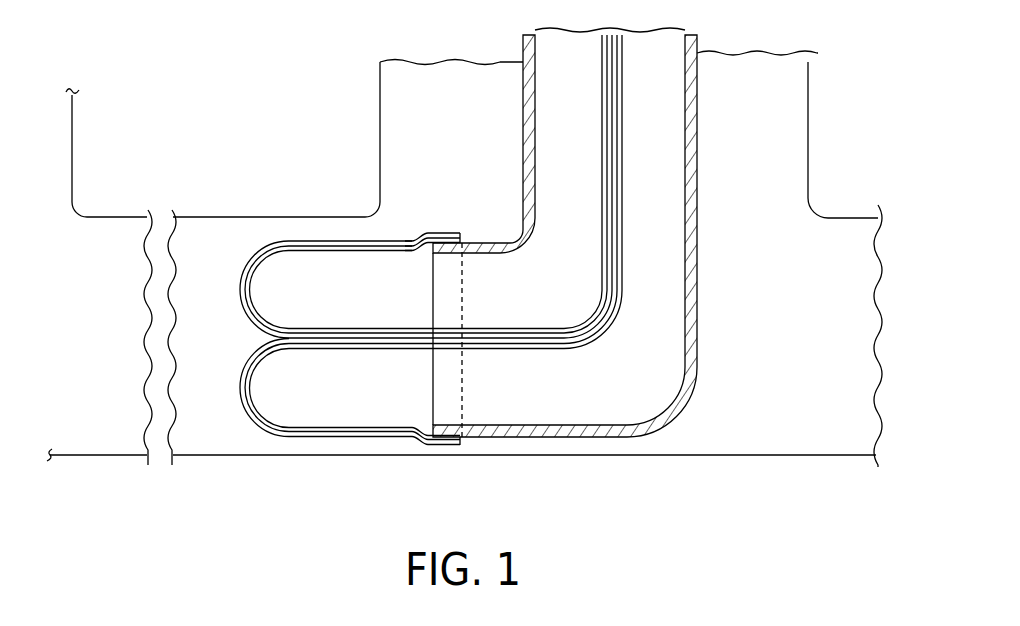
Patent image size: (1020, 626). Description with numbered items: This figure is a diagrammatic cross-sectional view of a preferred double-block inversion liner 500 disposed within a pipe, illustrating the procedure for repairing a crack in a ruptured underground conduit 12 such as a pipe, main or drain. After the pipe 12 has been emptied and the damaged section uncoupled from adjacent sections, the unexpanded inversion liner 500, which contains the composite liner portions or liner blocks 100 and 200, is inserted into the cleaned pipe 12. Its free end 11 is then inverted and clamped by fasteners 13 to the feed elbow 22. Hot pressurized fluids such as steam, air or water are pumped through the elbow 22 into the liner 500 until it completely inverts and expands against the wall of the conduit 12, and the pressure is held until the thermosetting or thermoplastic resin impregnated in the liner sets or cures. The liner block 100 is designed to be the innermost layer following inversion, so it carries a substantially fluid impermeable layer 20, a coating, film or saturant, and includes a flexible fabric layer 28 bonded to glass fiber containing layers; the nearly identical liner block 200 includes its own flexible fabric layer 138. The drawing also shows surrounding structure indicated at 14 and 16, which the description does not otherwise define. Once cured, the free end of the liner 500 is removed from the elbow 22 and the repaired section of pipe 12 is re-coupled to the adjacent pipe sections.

The free end 11 is at (424, 232).
The underground conduit 12 is at (258, 456).
The fasteners 13 is at (455, 232).
The housing wall 14 is at (380, 132).
The tank 16 is at (73, 135).
The substantially fluid impermeable layer 20 is at (265, 262).
The feed elbow 22 is at (697, 155).
The second flexible fabric layer 28 is at (333, 251).
The liner block 100 is at (250, 308).
The flexible fabric layer 138 is at (244, 261).
The liner block 200 is at (242, 288).
The inversion liner 500 is at (256, 338).